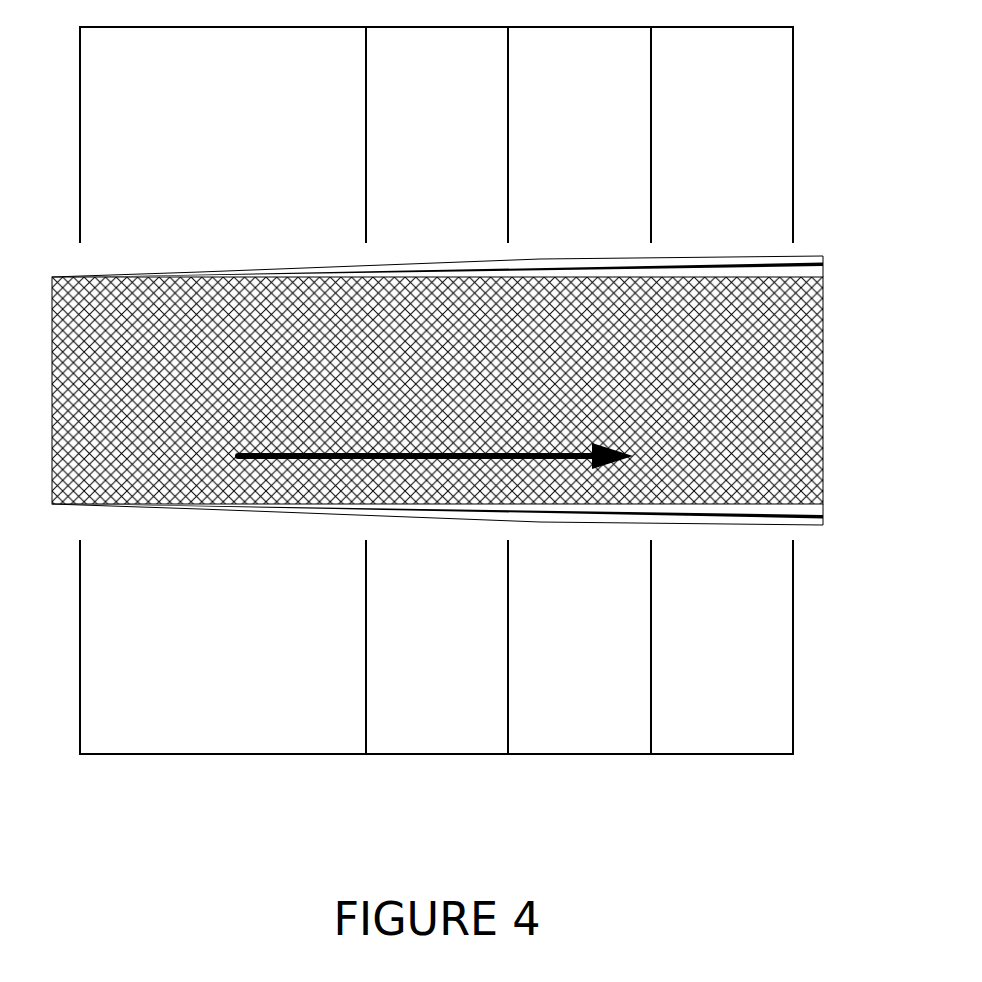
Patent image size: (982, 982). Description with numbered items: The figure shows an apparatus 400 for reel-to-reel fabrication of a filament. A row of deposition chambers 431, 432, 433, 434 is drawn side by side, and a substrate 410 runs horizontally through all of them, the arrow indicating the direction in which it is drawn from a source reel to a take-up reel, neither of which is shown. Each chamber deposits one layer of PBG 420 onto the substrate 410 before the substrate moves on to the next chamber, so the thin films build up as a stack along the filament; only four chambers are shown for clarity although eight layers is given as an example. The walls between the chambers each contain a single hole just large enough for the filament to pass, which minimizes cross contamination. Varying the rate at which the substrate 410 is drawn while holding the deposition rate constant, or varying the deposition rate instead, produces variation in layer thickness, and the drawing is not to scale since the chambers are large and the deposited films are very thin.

The apparatus for reel-to-reel fabrication of a filament 400 is at (762, 797).
The substrate 410 is at (416, 402).
The PBG 420 is at (830, 256).
The deposition chamber 431 is at (200, 76).
The deposition chamber 432 is at (416, 76).
The deposition chamber 433 is at (559, 76).
The deposition chamber 434 is at (702, 76).